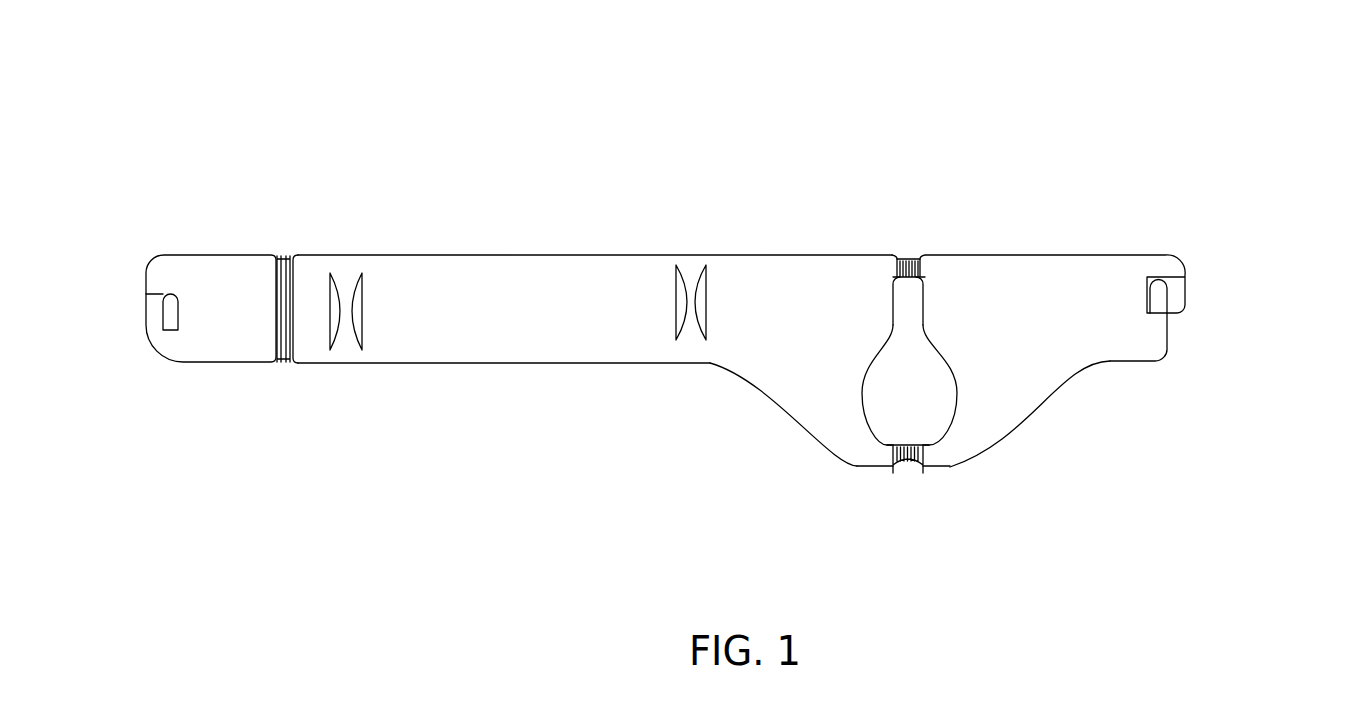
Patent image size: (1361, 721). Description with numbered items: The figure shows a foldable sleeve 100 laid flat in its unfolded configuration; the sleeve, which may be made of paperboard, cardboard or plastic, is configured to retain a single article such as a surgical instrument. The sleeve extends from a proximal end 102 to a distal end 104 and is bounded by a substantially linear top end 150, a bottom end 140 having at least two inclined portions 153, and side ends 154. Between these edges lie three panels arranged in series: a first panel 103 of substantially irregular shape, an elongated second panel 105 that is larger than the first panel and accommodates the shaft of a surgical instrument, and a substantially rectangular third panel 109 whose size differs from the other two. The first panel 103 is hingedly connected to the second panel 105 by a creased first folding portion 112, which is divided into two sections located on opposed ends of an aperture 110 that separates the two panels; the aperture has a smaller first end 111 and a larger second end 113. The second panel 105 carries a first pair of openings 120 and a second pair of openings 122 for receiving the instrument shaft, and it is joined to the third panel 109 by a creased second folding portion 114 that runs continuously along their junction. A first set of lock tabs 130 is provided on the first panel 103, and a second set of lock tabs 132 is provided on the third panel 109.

The foldable sleeve 100 is at (856, 84).
The proximal end 102 is at (820, 365).
The first panel 103 is at (1052, 394).
The distal end 104 is at (157, 356).
The second panel 105 is at (784, 424).
The third panel 109 is at (225, 363).
The aperture 110 is at (953, 381).
The first end 111 is at (926, 302).
The first folding portion 112 is at (910, 257).
The second end 113 is at (958, 398).
The second folding portion 114 is at (287, 362).
The first pair of openings 120 is at (332, 351).
The second pair of openings 122 is at (701, 341).
The first set of lock tabs 130 is at (1178, 313).
The second set of lock tabs 132 is at (155, 334).
The bottom end 140 is at (545, 364).
The top end 150 is at (513, 253).
The inclined portions 153 is at (843, 465).
The side ends 154 is at (653, 307).